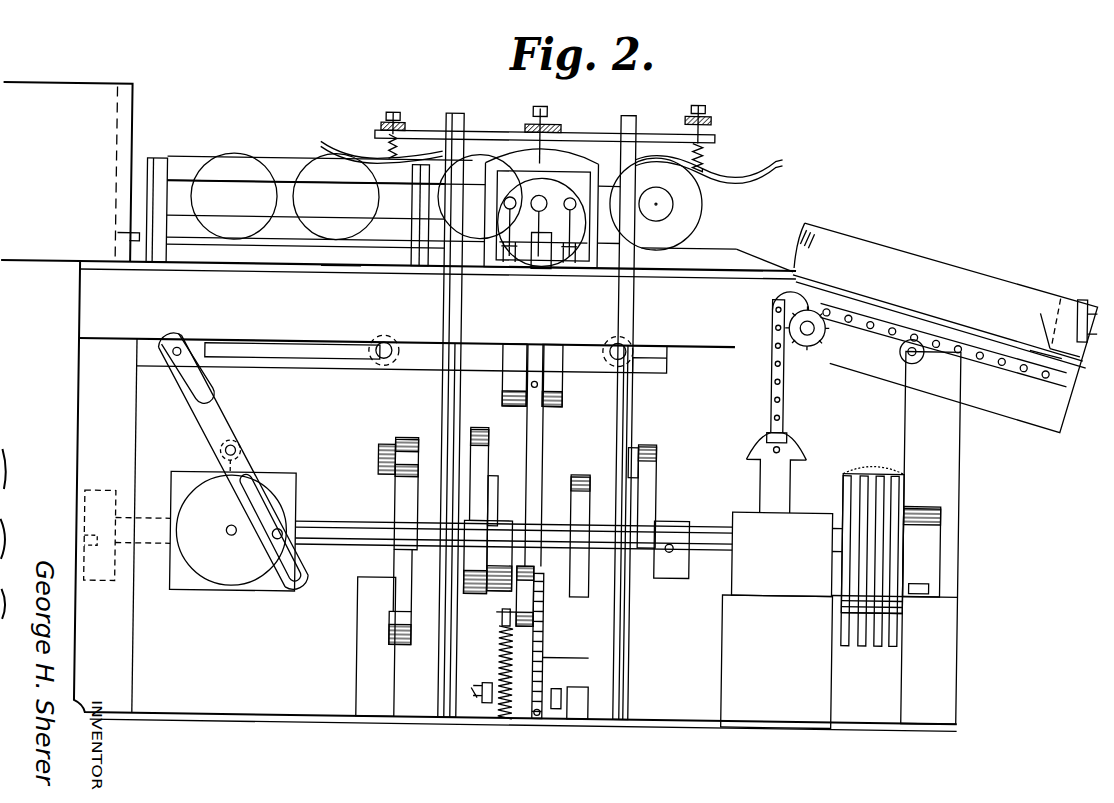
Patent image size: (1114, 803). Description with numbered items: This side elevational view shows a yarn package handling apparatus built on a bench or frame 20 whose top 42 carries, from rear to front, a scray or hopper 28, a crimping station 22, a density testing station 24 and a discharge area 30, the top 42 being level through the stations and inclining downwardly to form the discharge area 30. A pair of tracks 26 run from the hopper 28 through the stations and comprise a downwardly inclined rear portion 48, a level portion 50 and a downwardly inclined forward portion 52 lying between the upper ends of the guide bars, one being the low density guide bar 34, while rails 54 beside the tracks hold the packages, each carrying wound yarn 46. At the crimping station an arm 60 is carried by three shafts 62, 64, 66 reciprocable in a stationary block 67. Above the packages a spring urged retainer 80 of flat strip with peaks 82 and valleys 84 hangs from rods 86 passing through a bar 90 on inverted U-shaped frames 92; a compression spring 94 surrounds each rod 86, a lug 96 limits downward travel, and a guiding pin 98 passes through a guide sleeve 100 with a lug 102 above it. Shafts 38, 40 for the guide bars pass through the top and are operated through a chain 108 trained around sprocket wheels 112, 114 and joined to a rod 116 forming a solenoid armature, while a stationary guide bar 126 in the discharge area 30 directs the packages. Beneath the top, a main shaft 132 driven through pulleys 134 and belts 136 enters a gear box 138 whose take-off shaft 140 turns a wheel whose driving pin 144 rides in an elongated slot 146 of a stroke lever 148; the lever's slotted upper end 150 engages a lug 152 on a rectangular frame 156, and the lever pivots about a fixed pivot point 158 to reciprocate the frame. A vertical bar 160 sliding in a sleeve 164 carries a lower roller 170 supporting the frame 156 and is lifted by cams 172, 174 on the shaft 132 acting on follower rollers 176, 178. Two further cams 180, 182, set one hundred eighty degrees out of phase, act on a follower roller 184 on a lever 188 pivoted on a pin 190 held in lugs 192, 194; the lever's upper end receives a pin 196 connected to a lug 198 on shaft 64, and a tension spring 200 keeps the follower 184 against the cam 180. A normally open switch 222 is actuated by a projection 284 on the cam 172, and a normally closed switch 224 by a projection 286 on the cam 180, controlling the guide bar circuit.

The bench 20 is at (810, 170).
The crimping station 22 is at (540, 170).
The density testing station 24 is at (664, 204).
The tracks 26 is at (257, 266).
The hopper 28 is at (92, 99).
The discharge area 30 is at (838, 270).
The guide bar 34 is at (924, 251).
The shaft 38 is at (1082, 288).
The shaft 40 is at (936, 311).
The bench top 42 is at (338, 264).
The yarn 46 is at (248, 152).
The inclined rear portion 48 is at (118, 232).
The level portion 50 is at (722, 240).
The inclined forward portion 52 is at (750, 252).
The rails 54 is at (200, 146).
The arm 60 is at (640, 186).
The shaft 62 is at (508, 190).
The shaft 64 is at (551, 182).
The shaft 66 is at (579, 182).
The stationary block 67 is at (584, 163).
The package retainer 80 is at (318, 140).
The peaks 82 is at (440, 150).
The valleys 84 is at (382, 150).
The rods 86 is at (391, 108).
The bar 90 is at (478, 126).
The inverted U-shaped frames 92 is at (452, 108).
The compression spring 94 is at (385, 130).
The lug 96 is at (383, 110).
The guiding pin 98 is at (548, 122).
The guide sleeve 100 is at (560, 126).
The lug 102 is at (548, 106).
The chain 108 is at (786, 404).
The sprocket wheel 112 is at (916, 352).
The sprocket wheel 114 is at (826, 336).
The rod 116 is at (792, 479).
The stationary guide bar 126 is at (1054, 315).
The main shaft 132 is at (150, 512).
The pulleys 134 is at (848, 470).
The belts 136 is at (894, 490).
The gear box 138 is at (186, 592).
The take-off shaft 140 is at (240, 533).
The driving pin 144 is at (276, 540).
The elongated slot 146 is at (300, 506).
The stroke lever 148 is at (224, 420).
The slot 150 is at (200, 394).
The lug 152 is at (170, 350).
The rectangular frame 156 is at (307, 372).
The fixed pivot point 158 is at (242, 448).
The vertical bar 160 is at (378, 428).
The vertical sleeve 164 is at (360, 681).
The lower roller 170 is at (398, 343).
The cam 172 is at (400, 641).
The cam 174 is at (660, 492).
The cam follower roller 176 is at (405, 437).
The cam follower roller 178 is at (660, 446).
The cam 180 is at (490, 446).
The cam 182 is at (578, 470).
The follower roller 184 is at (470, 590).
The lever 188 is at (558, 270).
The fixed pivot pin 190 is at (548, 532).
The lug 192 is at (508, 338).
The lug 194 is at (575, 338).
The pin 196 is at (515, 255).
The lug 198 is at (548, 262).
The tension spring 200 is at (524, 716).
The normally open switch 222 is at (560, 702).
The normally closed switch 224 is at (497, 700).
The projection 284 is at (560, 652).
The projection 286 is at (495, 478).